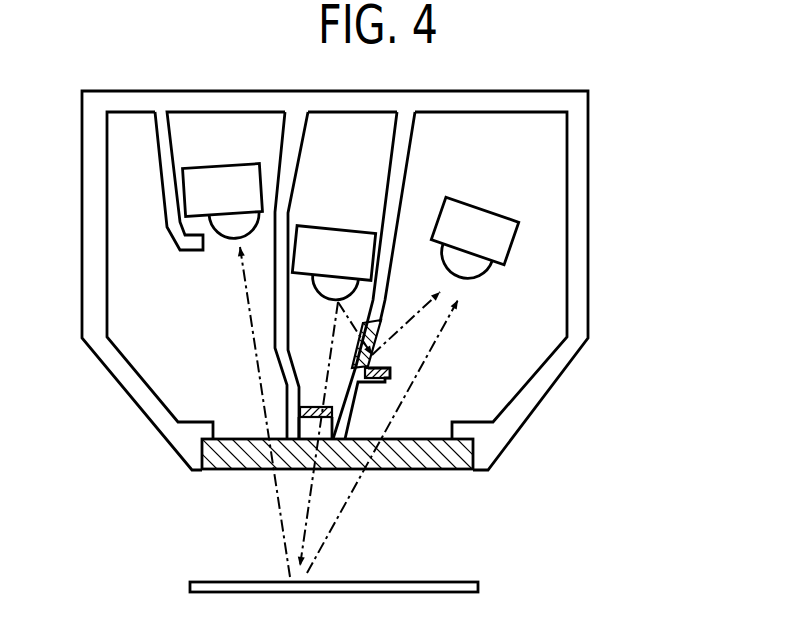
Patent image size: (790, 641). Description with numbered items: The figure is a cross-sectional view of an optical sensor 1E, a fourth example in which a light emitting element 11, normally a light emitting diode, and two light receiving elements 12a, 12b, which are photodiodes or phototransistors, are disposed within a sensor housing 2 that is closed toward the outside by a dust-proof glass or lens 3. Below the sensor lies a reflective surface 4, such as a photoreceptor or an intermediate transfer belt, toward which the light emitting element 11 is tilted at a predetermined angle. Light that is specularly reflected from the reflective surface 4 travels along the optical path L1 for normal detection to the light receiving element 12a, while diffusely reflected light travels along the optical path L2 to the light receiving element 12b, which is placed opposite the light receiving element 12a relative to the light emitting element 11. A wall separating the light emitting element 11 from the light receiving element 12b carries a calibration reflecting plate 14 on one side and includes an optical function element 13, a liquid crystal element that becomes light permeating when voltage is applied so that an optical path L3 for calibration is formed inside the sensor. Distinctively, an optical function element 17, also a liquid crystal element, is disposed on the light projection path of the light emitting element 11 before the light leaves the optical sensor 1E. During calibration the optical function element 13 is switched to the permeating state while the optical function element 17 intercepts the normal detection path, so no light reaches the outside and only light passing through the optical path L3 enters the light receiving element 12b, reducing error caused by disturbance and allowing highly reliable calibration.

The optical sensor 1E is at (631, 117).
The sensor housing 2 is at (130, 399).
The dust-proof glass or lens 3 is at (436, 470).
The reflective surface 4 is at (463, 582).
The light emitting element 11 is at (343, 235).
The light receiving element 12a is at (222, 168).
The light receiving element 12b is at (478, 212).
The optical function element 13 is at (378, 321).
The calibration reflecting plate 14 is at (389, 376).
The optical function element 17 is at (300, 413).
The optical path L1 is at (278, 510).
The optical path L2 is at (333, 523).
The optical path L3 is at (410, 336).